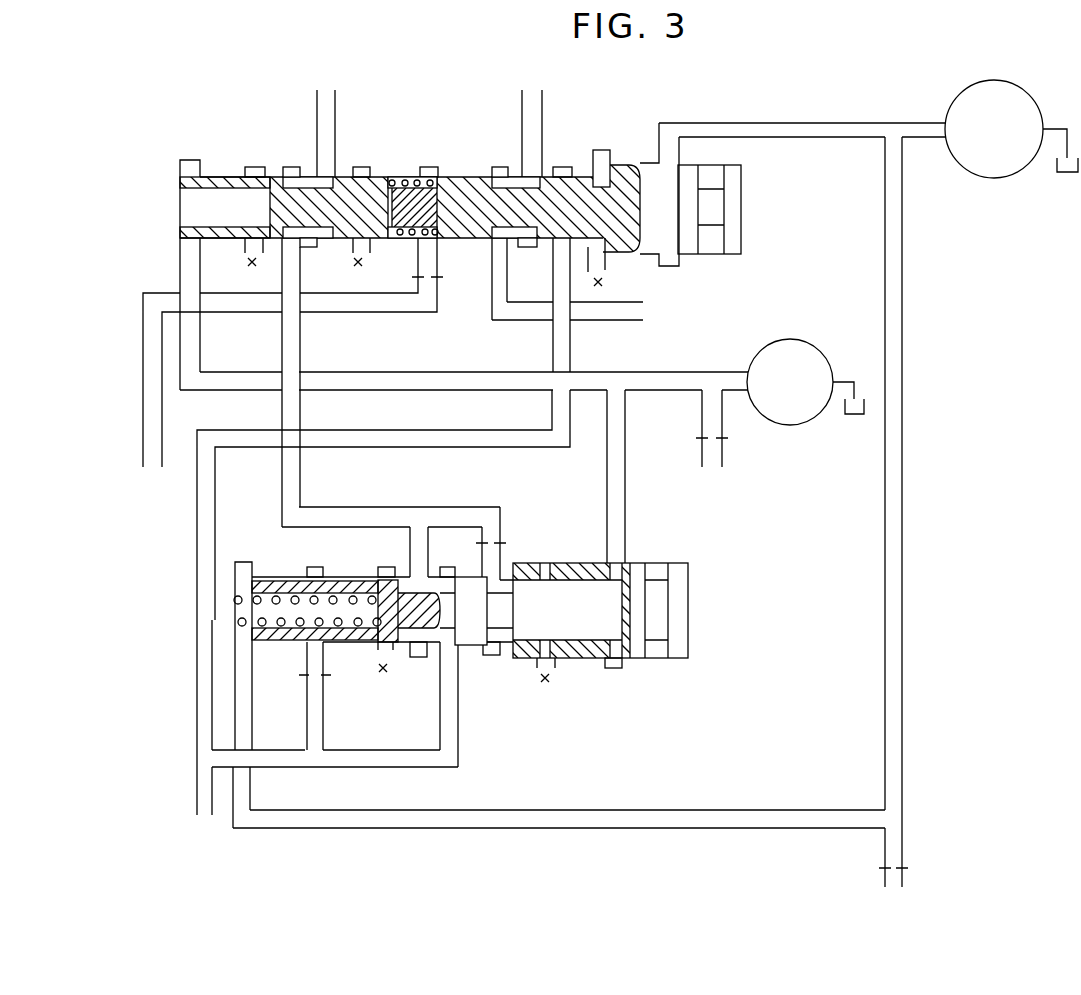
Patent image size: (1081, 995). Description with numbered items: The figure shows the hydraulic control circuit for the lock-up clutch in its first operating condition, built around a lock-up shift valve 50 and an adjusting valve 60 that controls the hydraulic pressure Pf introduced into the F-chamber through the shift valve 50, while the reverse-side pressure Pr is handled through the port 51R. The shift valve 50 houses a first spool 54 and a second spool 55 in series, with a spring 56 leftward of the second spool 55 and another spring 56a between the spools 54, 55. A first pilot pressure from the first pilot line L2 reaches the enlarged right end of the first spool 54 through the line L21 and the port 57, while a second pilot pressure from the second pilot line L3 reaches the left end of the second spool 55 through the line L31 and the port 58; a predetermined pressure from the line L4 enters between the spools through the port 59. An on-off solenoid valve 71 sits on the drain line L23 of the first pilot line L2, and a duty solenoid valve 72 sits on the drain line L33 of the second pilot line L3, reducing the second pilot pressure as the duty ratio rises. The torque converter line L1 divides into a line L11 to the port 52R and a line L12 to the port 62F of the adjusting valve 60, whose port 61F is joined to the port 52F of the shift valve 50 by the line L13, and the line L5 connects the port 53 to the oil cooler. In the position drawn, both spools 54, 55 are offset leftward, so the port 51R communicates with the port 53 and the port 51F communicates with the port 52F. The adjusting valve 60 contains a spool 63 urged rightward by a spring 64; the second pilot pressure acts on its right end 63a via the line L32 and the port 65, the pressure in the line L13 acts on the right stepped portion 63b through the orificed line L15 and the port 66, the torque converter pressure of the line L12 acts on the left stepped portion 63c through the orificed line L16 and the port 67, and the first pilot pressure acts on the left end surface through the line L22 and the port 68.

The lock-up shift valve 50 is at (176, 157).
The port 51F is at (330, 176).
The port 51R is at (532, 180).
The port 52F is at (293, 235).
The port 52R is at (560, 243).
The port 53 is at (497, 240).
The first spool 54 is at (462, 175).
The second spool 55 is at (381, 180).
The spring 56 is at (237, 185).
The spring 56a is at (408, 180).
The port 57 is at (670, 157).
The port 58 is at (190, 243).
The port 59 is at (430, 240).
The adjusting valve 60 is at (267, 563).
The port 61F is at (421, 574).
The port 62F is at (450, 648).
The spool 63 is at (360, 579).
The right end of the spool 63a is at (625, 630).
The right stepped portion 63b is at (490, 640).
The left stepped portion 63c is at (333, 578).
The spring 64 is at (234, 596).
The port 65 is at (612, 665).
The port 66 is at (492, 573).
The port 67 is at (315, 646).
The port 68 is at (237, 640).
The on-off solenoid valve 71 is at (1000, 82).
The duty solenoid valve 72 is at (788, 339).
The hydraulic pressure Pf is at (327, 116).
The reverse brake pressure Pr is at (533, 116).
The torque converter line L1 is at (196, 790).
The first pilot line L2 is at (905, 843).
The second pilot line L3 is at (724, 445).
The line L4 is at (141, 391).
The line L5 is at (610, 323).
The line L11 is at (196, 684).
The line L12 is at (282, 770).
The line L13 is at (327, 507).
The line L15 is at (518, 507).
The line L16 is at (307, 707).
The line L21 is at (822, 122).
The line L22 is at (760, 810).
The drain line L23 is at (926, 122).
The line L31 is at (418, 392).
The line L32 is at (627, 527).
The drain line L33 is at (730, 372).